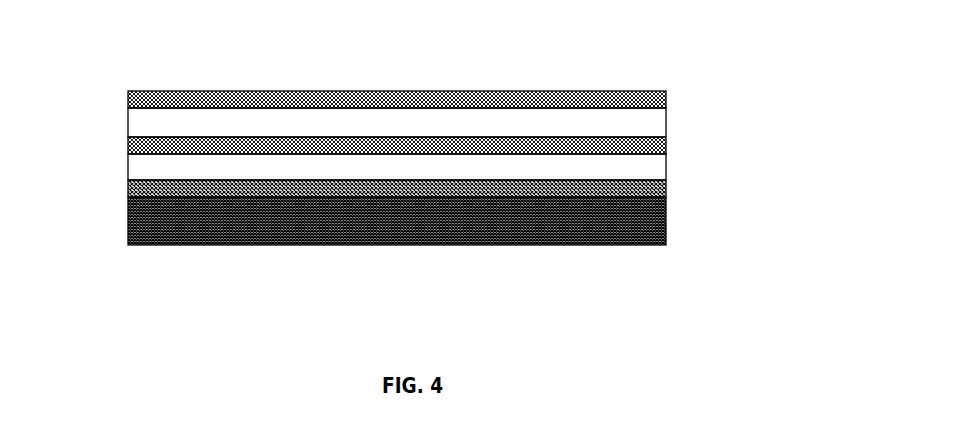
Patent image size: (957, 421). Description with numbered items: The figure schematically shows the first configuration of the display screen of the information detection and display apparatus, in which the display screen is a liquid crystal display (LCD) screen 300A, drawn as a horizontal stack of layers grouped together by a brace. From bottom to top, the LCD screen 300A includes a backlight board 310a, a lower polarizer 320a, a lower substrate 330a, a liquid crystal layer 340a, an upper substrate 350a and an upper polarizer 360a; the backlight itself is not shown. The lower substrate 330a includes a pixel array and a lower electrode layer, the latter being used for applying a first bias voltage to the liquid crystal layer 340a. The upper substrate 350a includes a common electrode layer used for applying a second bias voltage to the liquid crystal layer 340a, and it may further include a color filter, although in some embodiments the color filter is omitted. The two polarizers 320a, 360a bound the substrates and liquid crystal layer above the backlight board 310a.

The liquid crystal display screen 300A is at (110, 85).
The backlight board 310a is at (668, 220).
The lower polarizer 320a is at (657, 188).
The lower substrate 330a is at (640, 167).
The liquid crystal layer 340a is at (653, 145).
The upper substrate 350a is at (645, 122).
The upper polarizer 360a is at (645, 103).